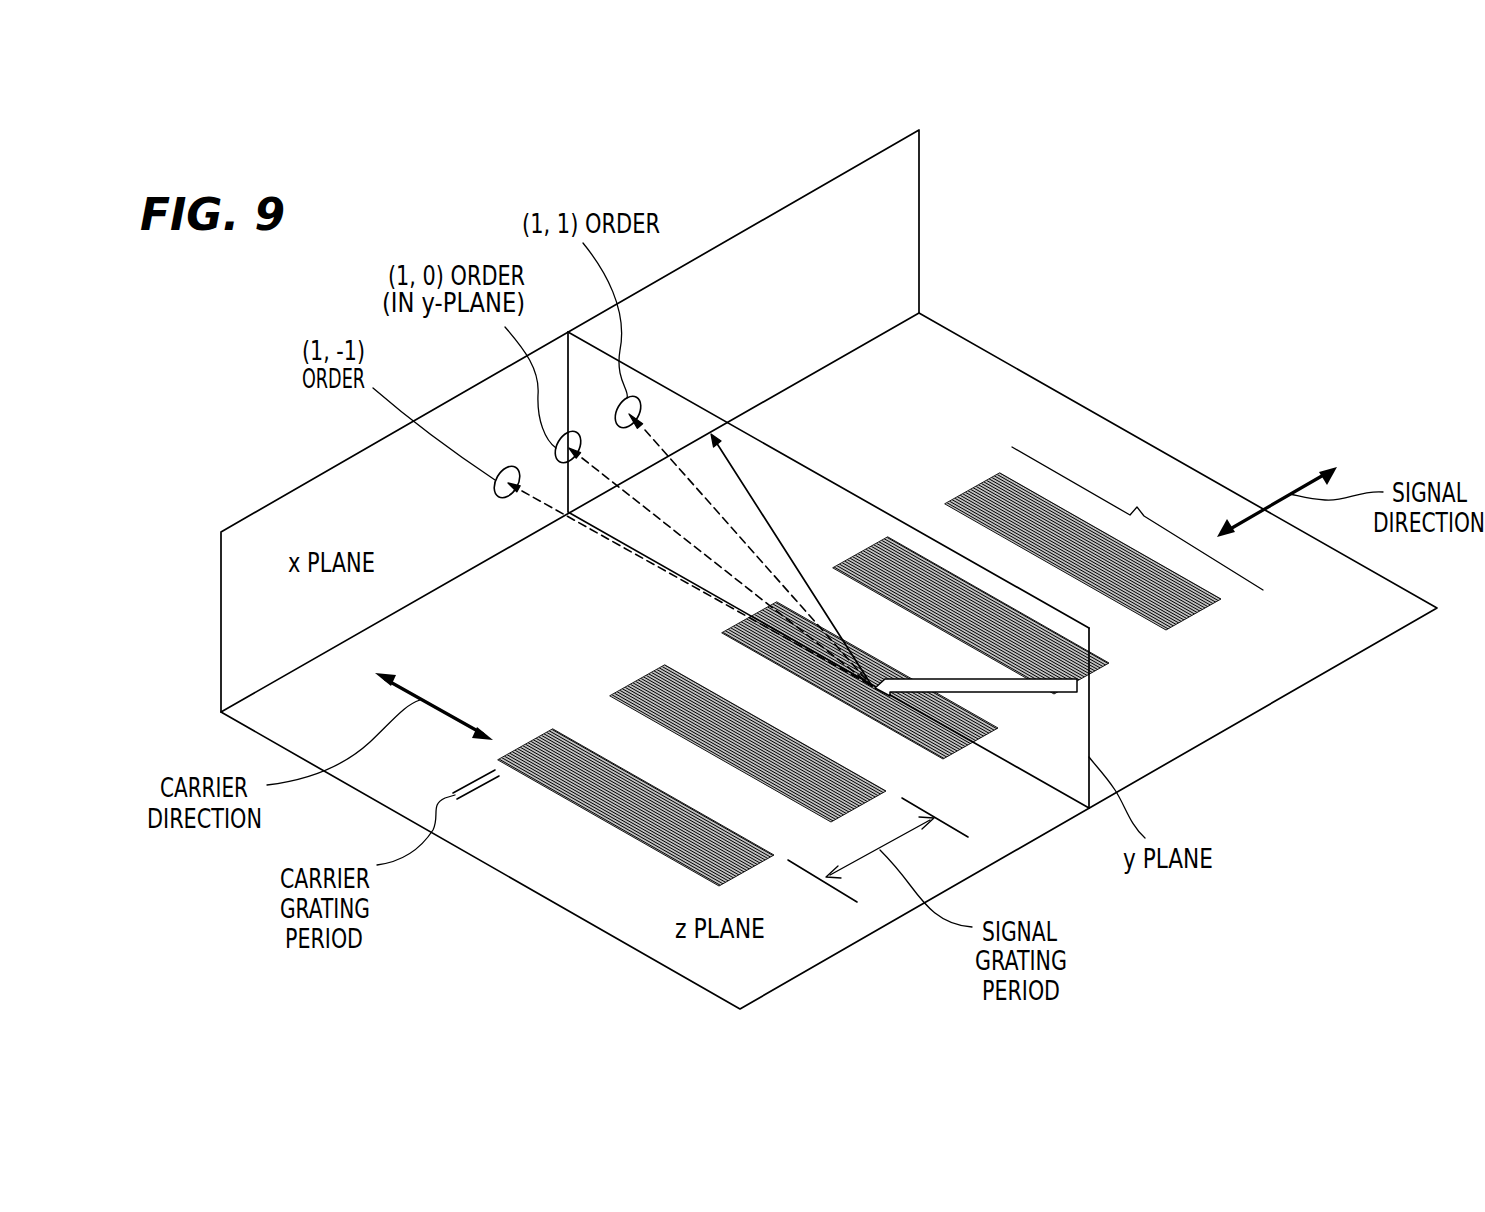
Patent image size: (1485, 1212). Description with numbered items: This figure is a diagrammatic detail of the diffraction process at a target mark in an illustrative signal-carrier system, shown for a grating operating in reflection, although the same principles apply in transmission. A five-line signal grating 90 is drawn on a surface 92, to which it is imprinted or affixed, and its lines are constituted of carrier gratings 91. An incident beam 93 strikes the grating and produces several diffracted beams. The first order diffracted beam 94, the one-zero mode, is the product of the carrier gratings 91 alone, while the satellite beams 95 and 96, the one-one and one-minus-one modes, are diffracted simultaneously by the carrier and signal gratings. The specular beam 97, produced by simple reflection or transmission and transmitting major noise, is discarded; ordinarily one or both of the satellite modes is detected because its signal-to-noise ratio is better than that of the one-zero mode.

The signal grating 90 is at (733, 624).
The carrier gratings 91 is at (1137, 518).
The surface 92 is at (1053, 388).
The incident beam 93 is at (1007, 693).
The first order diffracted beam 94 is at (680, 470).
The satellite beam 95 is at (615, 542).
The satellite beam 96 is at (638, 500).
The specular beam 97 is at (746, 488).